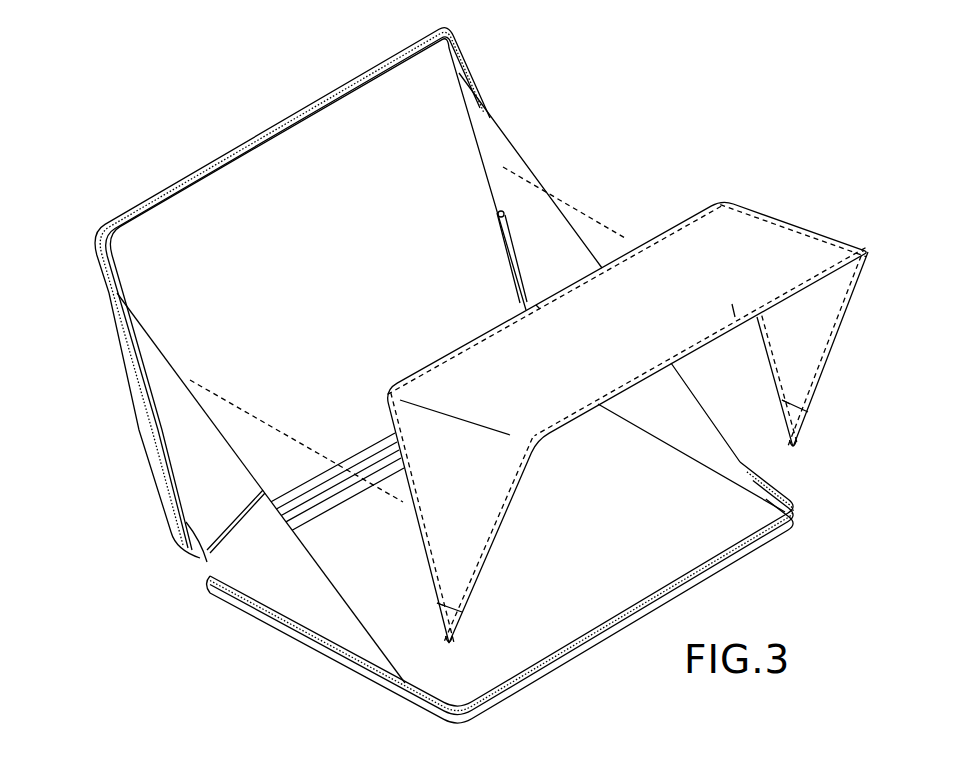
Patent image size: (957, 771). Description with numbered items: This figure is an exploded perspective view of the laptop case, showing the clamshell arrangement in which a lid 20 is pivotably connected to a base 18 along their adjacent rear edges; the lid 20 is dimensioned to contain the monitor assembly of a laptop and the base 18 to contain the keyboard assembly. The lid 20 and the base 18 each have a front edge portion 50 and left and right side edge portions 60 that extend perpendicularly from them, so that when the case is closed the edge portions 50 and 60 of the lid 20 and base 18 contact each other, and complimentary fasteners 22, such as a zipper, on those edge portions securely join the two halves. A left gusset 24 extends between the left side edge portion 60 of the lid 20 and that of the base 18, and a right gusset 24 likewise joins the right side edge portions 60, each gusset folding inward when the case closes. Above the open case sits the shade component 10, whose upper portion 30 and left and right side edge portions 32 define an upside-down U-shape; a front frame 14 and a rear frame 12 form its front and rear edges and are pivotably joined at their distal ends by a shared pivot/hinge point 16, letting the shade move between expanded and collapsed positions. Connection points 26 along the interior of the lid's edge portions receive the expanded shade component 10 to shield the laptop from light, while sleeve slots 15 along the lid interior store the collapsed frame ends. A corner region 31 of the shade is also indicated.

The shade component 10 is at (763, 218).
The rear frame 12 is at (538, 308).
The front frame 14 is at (732, 305).
The sleeve slot 15 is at (503, 233).
The pivot/hinge point 16 is at (440, 643).
The base 18 is at (507, 692).
The lid 20 is at (105, 222).
The complimentary fasteners 22 is at (163, 190).
The gusset 24 is at (513, 157).
The connection points 26 is at (115, 770).
The upper portion 30 is at (608, 311).
The shelf corner 31 is at (425, 407).
The side edge portions 32 is at (784, 339).
The front edge portion 50 is at (237, 160).
The side edge portions 60 is at (473, 73).